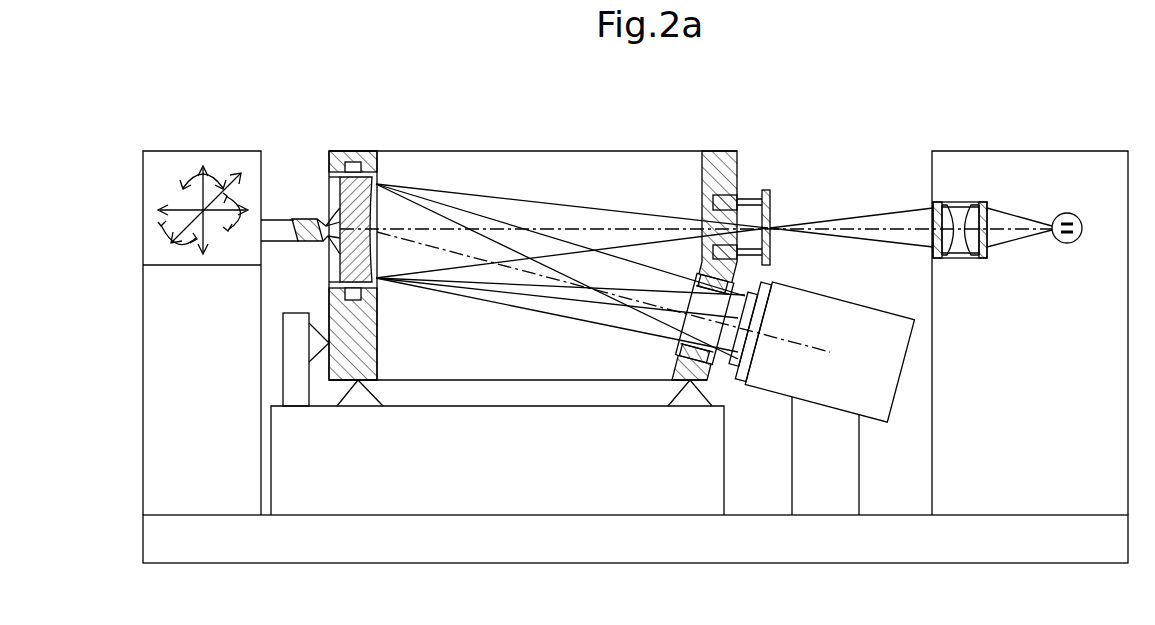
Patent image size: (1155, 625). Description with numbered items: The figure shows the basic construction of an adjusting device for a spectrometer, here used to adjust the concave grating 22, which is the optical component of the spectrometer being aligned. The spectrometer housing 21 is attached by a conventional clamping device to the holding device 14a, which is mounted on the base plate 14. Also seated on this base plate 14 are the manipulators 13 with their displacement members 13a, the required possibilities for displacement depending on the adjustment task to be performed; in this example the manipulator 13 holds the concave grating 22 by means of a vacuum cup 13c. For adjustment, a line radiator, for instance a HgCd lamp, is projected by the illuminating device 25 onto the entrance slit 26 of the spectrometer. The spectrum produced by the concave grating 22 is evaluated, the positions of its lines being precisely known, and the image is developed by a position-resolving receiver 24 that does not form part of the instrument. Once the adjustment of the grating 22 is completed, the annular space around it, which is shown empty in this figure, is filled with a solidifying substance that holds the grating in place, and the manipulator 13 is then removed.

The manipulator 13 is at (165, 468).
The displacement member 13a is at (163, 165).
The vacuum cup 13c is at (314, 224).
The base plate 14 is at (672, 545).
The holding device 14a is at (505, 492).
The housing 21 is at (497, 150).
The concave grating 22 is at (342, 186).
The position-resolving receiver 24 is at (874, 402).
The illuminating device 25 is at (962, 138).
The entrance slit 26 is at (776, 207).